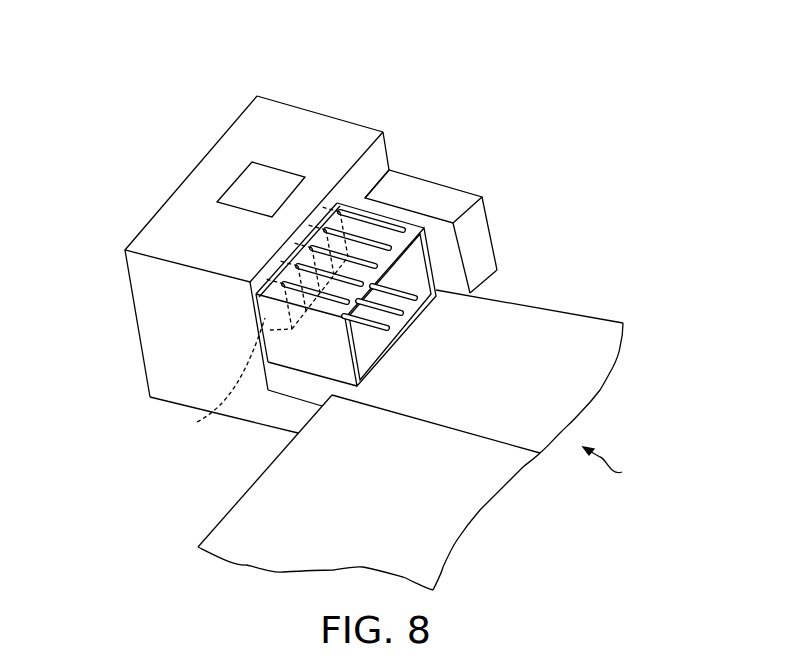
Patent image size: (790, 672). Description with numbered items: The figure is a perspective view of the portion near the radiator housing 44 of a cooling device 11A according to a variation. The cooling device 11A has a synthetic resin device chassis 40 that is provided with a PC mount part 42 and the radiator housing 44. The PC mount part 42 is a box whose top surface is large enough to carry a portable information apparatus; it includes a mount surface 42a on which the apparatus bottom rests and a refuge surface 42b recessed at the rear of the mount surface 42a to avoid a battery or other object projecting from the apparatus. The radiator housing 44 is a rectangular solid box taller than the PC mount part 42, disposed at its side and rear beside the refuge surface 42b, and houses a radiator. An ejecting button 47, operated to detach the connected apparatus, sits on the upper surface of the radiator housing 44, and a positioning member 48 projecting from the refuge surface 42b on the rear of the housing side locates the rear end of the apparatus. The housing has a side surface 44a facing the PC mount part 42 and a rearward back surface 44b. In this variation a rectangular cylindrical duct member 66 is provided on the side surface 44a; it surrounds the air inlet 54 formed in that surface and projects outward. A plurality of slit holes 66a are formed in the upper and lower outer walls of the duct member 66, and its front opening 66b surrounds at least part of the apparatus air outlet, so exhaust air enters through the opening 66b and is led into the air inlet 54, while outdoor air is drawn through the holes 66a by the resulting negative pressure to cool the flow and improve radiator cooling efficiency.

The cooling device 11A is at (395, 29).
The device chassis 40 is at (615, 465).
The PC mount part 42 is at (230, 528).
The mount surface 42a is at (463, 508).
The refuge surface 42b is at (590, 312).
The radiator housing 44 is at (150, 328).
The side surface 44a is at (378, 150).
The back surface 44b is at (317, 112).
The ejecting button 47 is at (243, 187).
The positioning member 48 is at (437, 190).
The air inlet 54 is at (258, 321).
The duct member 66 is at (313, 360).
The slit holes 66a is at (392, 343).
The front opening 66b is at (430, 303).